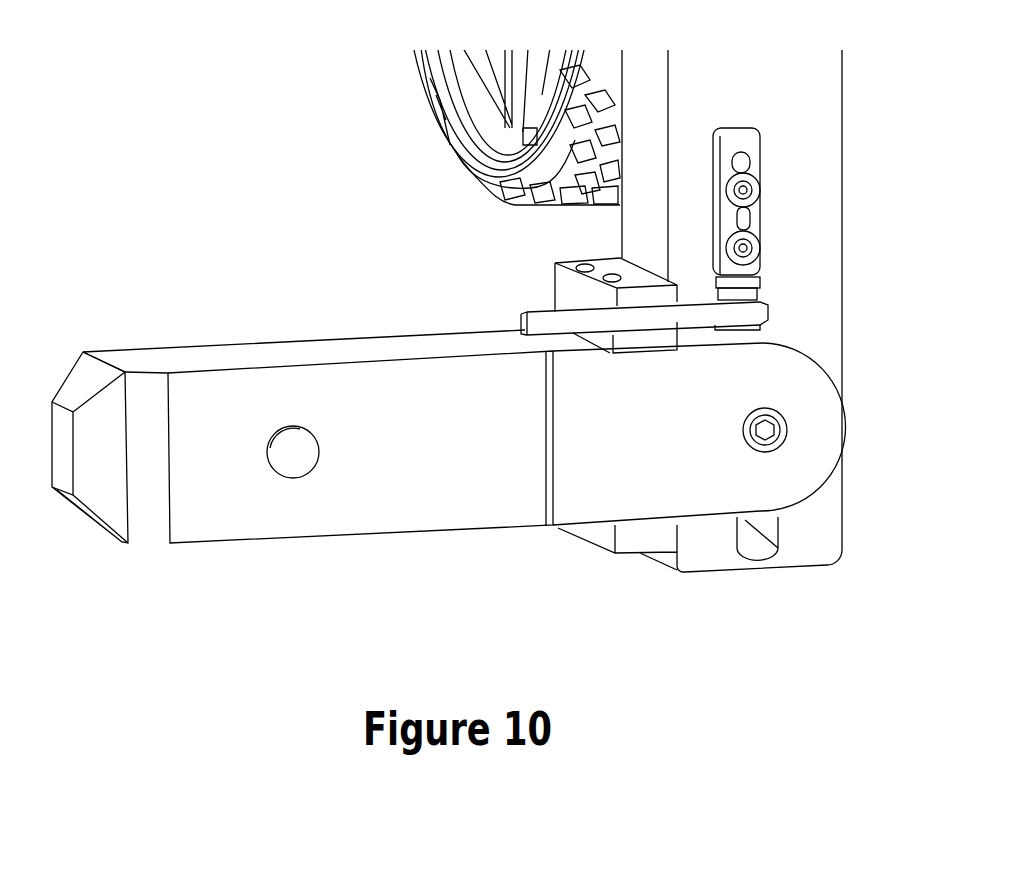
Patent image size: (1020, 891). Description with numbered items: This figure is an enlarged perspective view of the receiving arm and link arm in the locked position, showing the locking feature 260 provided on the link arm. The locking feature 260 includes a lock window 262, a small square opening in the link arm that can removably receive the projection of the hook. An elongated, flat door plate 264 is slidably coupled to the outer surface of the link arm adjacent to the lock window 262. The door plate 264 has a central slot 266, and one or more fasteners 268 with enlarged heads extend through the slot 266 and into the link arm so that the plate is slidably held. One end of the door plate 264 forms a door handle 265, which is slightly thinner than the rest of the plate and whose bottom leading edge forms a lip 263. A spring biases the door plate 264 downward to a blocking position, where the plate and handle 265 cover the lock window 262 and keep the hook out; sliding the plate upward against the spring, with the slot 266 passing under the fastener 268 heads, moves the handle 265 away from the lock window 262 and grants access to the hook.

The locking feature 260 is at (803, 127).
The lock window 262 is at (758, 294).
The lip 263 is at (757, 284).
The door plate 264 is at (745, 164).
The door handle 265 is at (760, 276).
The central slot 266 is at (747, 163).
The fasteners 268 is at (760, 189).